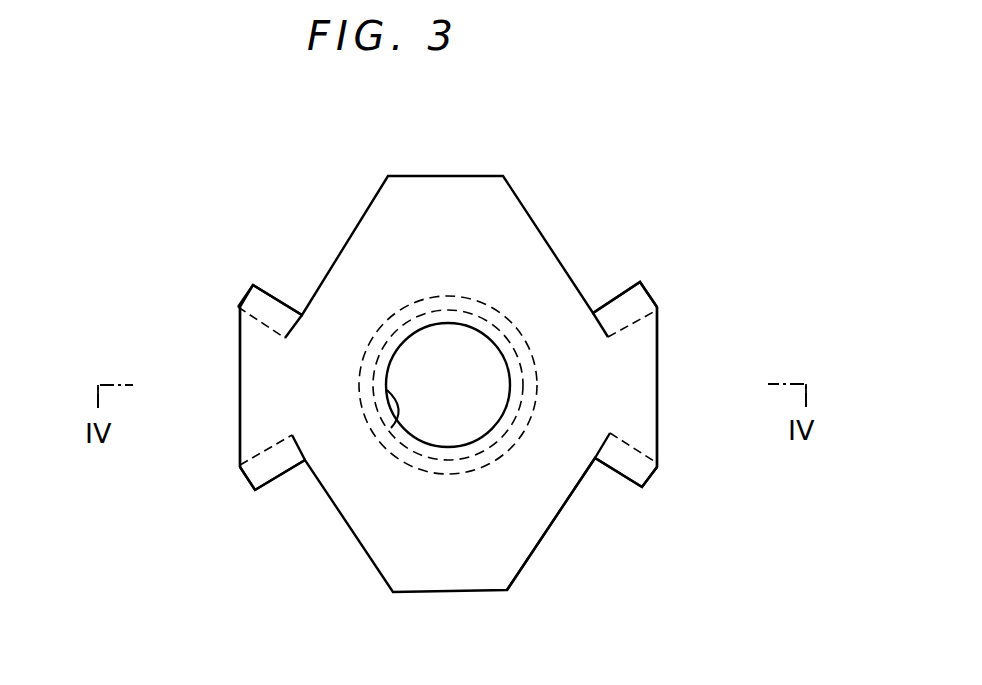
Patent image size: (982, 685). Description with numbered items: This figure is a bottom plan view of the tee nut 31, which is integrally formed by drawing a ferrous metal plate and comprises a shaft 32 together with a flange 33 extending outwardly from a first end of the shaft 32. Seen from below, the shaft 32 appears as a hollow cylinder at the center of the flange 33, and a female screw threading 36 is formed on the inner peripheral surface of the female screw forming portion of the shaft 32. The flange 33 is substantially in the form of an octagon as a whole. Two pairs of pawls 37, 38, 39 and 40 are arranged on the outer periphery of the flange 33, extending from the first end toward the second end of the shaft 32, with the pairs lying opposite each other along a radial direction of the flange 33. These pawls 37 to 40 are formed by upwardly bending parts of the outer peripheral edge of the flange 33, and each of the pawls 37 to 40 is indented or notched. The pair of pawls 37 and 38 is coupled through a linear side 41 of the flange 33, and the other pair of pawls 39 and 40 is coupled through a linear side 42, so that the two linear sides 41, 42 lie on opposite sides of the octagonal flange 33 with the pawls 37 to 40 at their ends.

The tee nut 31 is at (284, 164).
The shaft 32 is at (483, 303).
The flange 33 is at (532, 537).
The female screw threading 36 is at (400, 423).
The pawl 37 is at (257, 487).
The pawl 38 is at (254, 290).
The pawl 39 is at (647, 471).
The pawl 40 is at (645, 297).
The linear side 41 is at (240, 363).
The linear side 42 is at (657, 366).